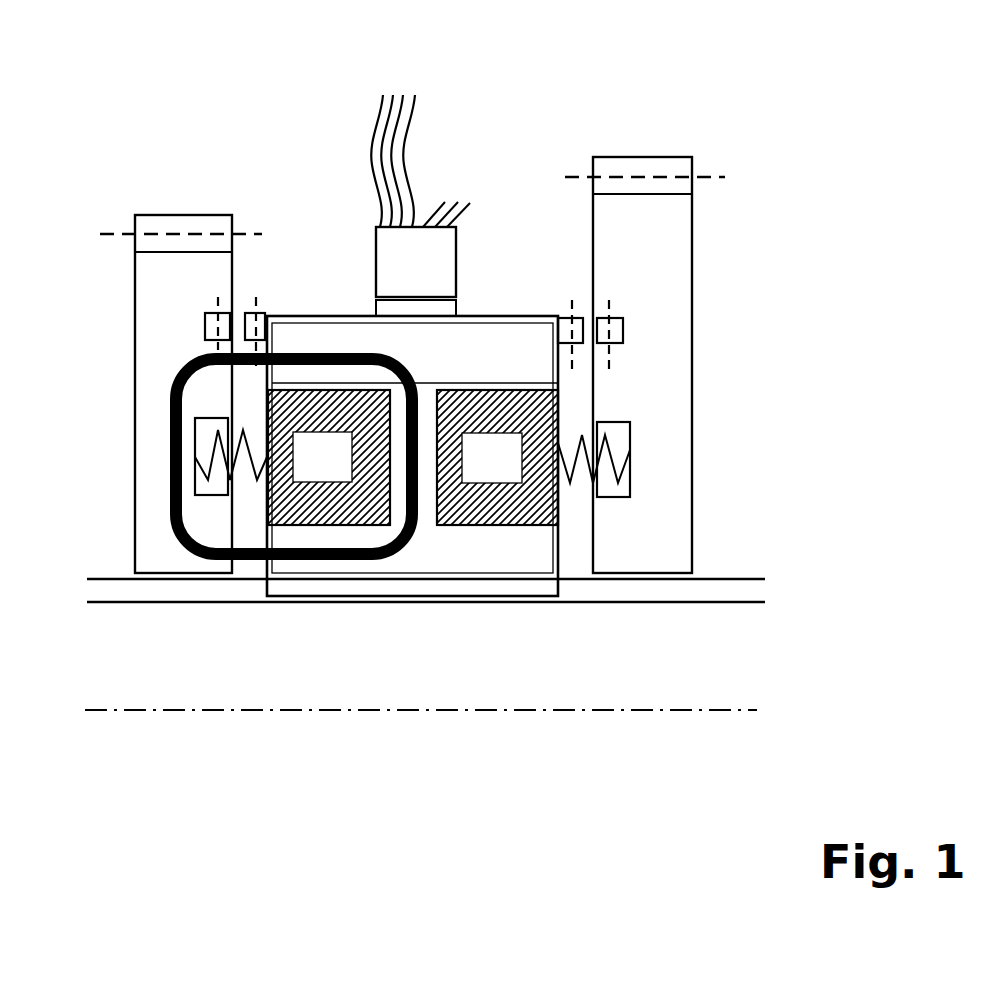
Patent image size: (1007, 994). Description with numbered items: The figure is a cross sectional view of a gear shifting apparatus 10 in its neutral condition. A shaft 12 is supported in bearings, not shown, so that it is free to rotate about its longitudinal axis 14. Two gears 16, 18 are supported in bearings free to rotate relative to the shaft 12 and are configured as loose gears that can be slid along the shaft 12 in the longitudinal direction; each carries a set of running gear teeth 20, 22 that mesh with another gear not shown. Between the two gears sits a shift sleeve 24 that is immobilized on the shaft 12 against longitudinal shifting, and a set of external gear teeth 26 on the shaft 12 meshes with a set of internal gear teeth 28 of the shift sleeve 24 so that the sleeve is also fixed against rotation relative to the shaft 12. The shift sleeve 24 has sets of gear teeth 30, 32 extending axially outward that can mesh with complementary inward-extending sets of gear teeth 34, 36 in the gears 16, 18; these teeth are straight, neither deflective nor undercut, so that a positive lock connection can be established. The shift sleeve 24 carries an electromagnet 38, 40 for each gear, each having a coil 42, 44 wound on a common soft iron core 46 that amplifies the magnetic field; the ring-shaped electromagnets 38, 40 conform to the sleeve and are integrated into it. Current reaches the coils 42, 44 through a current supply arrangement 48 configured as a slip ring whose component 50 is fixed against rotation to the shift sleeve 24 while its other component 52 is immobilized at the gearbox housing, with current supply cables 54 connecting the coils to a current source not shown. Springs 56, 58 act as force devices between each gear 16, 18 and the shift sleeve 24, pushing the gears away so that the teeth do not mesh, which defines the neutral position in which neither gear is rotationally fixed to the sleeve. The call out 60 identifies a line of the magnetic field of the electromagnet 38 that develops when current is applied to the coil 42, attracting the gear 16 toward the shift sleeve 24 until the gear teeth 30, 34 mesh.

The gear shifting apparatus 10 is at (500, 104).
The shaft 12 is at (687, 670).
The longitudinal axis 14 is at (148, 708).
The gear 16 is at (191, 304).
The gear 18 is at (656, 251).
The running gear teeth 20 is at (158, 228).
The running gear teeth 22 is at (630, 173).
The shift sleeve 24 is at (475, 278).
The external gear teeth 26 is at (108, 590).
The internal gear teeth 28 is at (508, 592).
The gear teeth 30 is at (260, 320).
The gear teeth 32 is at (565, 318).
The gear teeth 34 is at (207, 327).
The gear teeth 36 is at (617, 332).
The electromagnet 38 is at (314, 546).
The electromagnet 40 is at (473, 546).
The coil 42 is at (337, 471).
The coil 44 is at (507, 472).
The core 46 is at (481, 366).
The current supply arrangement 48 is at (355, 236).
The component 50 is at (376, 298).
The component 52 is at (431, 280).
The current supply cables 54 is at (372, 167).
The spring 56 is at (243, 508).
The spring 58 is at (571, 508).
The line of the magnetic field 60 is at (167, 443).